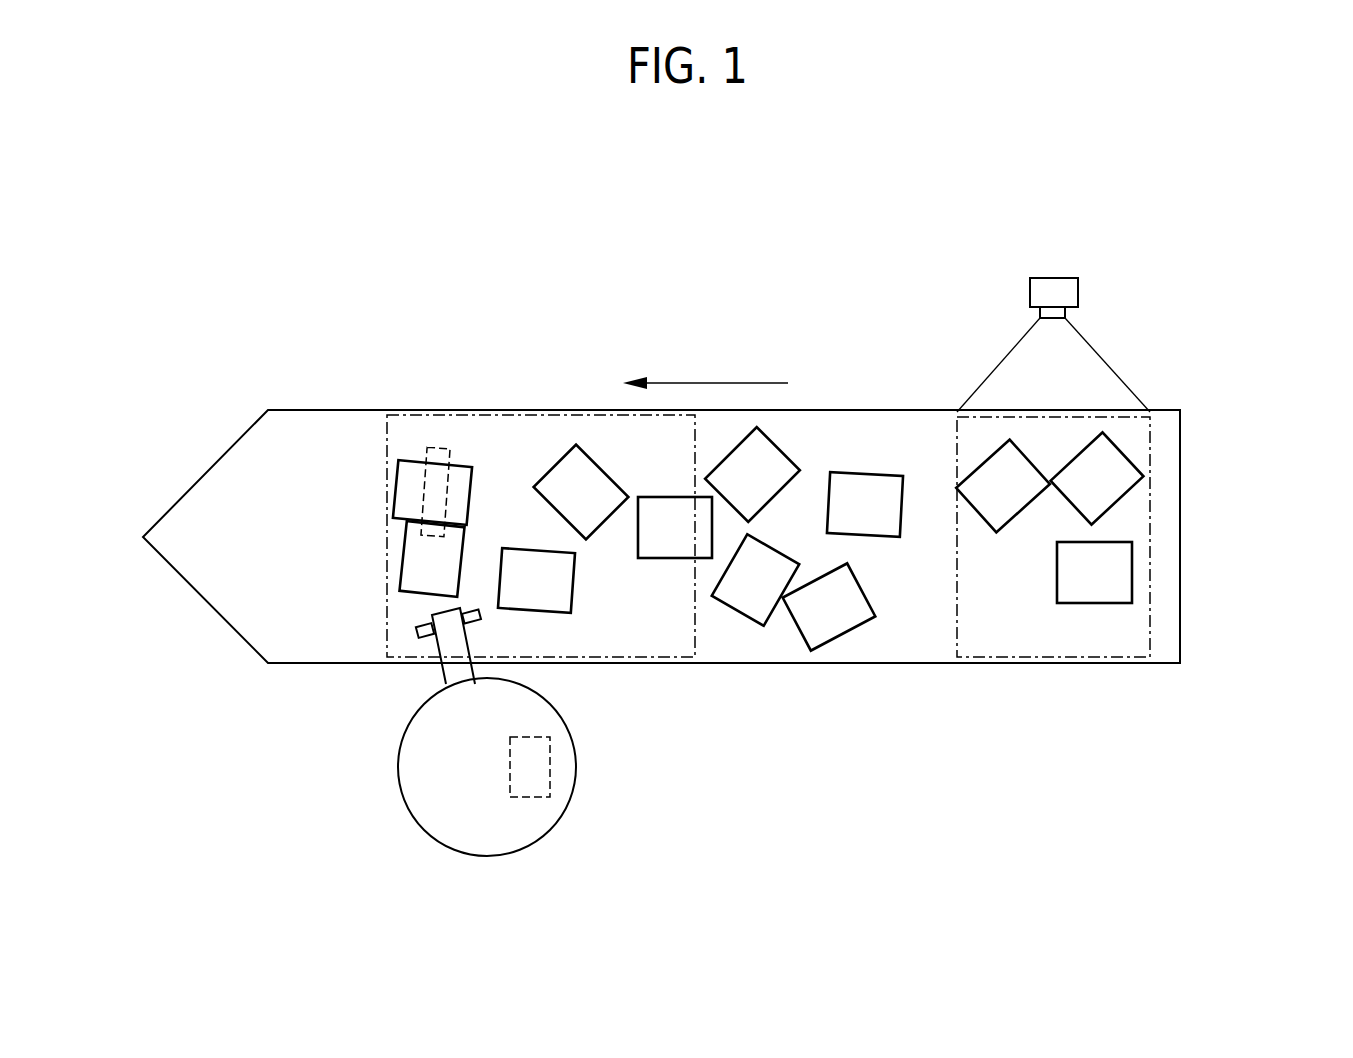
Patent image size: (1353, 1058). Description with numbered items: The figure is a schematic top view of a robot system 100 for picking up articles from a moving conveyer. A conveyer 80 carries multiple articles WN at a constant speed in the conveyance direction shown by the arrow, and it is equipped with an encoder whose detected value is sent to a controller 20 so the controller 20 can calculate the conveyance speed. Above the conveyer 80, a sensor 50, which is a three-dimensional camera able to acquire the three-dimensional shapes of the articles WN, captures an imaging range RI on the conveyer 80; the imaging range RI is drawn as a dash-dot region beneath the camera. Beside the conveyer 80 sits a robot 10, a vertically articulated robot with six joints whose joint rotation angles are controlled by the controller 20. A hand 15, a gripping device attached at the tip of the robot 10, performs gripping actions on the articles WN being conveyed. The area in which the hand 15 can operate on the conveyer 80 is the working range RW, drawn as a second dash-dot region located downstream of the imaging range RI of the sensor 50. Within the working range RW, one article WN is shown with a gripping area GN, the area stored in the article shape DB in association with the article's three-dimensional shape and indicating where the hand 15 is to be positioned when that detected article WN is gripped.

The robot system 100 is at (910, 197).
The conveyer 80 is at (838, 410).
The sensor 50 is at (1030, 290).
The imaging range RI is at (1152, 450).
The working range RW is at (387, 472).
The article WN is at (465, 465).
The gripping area GN is at (437, 447).
The hand 15 is at (418, 634).
The controller 20 is at (550, 767).
The robot 10 is at (596, 840).